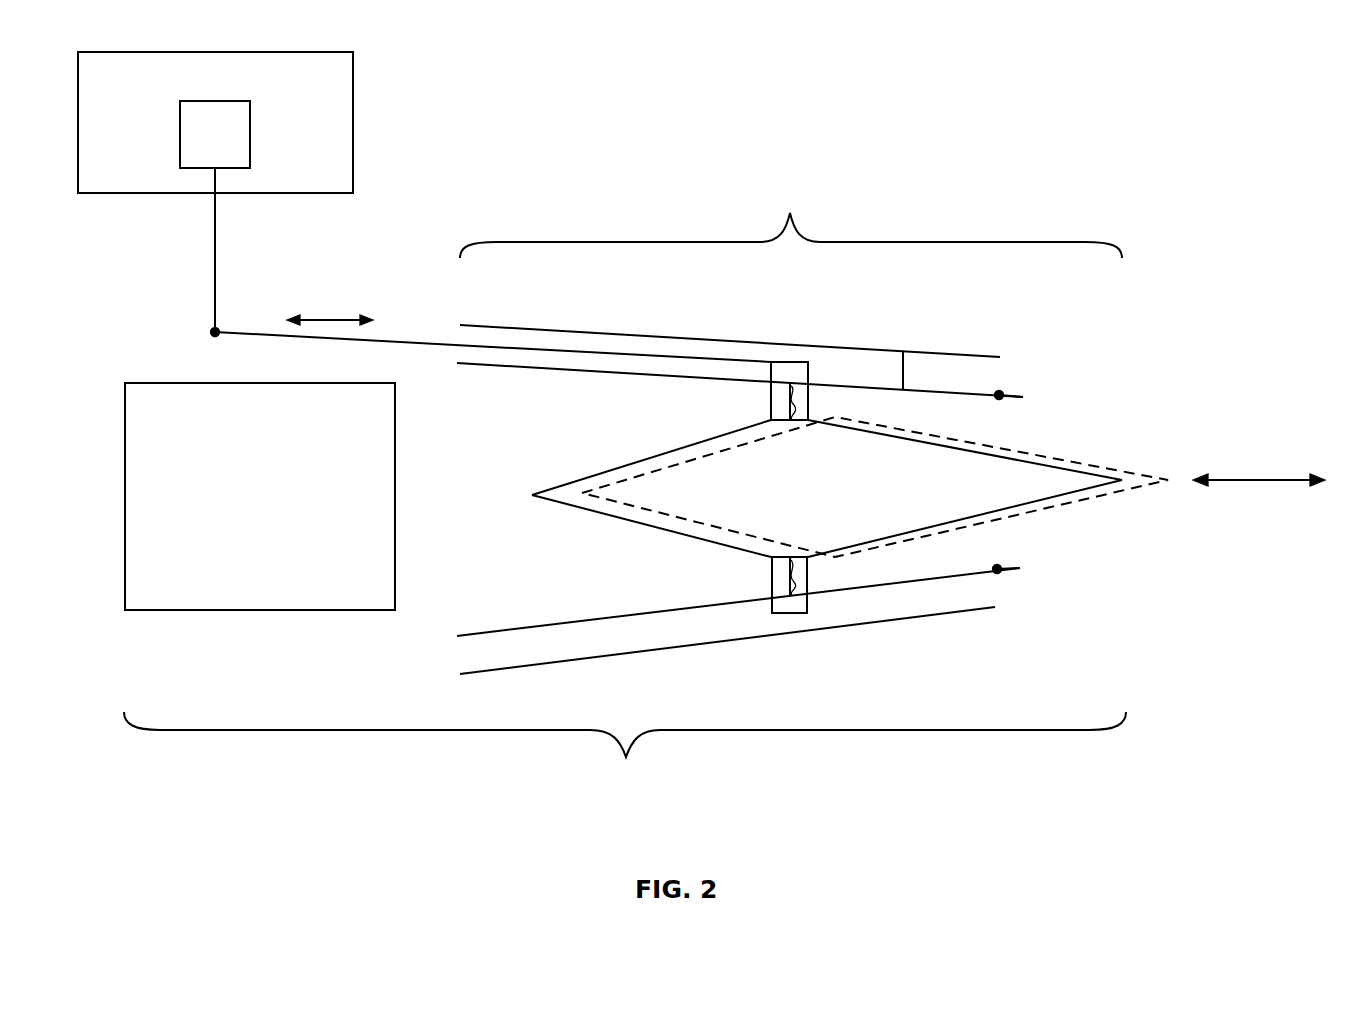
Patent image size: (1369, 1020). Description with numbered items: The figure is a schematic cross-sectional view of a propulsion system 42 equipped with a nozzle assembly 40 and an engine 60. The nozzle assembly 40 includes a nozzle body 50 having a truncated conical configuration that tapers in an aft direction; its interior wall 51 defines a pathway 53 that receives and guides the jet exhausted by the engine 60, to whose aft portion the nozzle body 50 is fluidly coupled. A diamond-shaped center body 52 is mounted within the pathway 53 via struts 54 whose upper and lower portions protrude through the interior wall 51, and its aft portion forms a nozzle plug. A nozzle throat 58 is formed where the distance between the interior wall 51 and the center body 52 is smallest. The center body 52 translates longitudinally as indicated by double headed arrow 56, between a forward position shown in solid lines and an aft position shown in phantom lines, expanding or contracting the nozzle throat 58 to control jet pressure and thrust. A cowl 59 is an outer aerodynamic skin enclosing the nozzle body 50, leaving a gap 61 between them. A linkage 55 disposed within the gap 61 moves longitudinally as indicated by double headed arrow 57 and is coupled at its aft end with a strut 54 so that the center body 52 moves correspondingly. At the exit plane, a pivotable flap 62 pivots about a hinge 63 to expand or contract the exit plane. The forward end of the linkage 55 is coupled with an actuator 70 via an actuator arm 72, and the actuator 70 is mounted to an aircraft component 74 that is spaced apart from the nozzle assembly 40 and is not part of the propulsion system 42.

The nozzle assembly 40 is at (791, 219).
The propulsion system 42 is at (625, 758).
The nozzle body 50 is at (967, 391).
The interior wall 51 is at (520, 370).
The center body 52 is at (580, 480).
The pathway 53 is at (600, 395).
The struts 54 is at (770, 393).
The linkage 55 is at (407, 342).
The double headed arrow 56 is at (1253, 478).
The double headed arrow 57 is at (327, 318).
The nozzle throat 58 is at (790, 400).
The cowl 59 is at (843, 345).
The engine 60 is at (252, 612).
The gap 61 is at (907, 370).
The pivotable flap 62 is at (1002, 398).
The hinge 63 is at (997, 400).
The actuator 70 is at (250, 133).
The actuator arm 72 is at (216, 238).
The aircraft component 74 is at (355, 92).